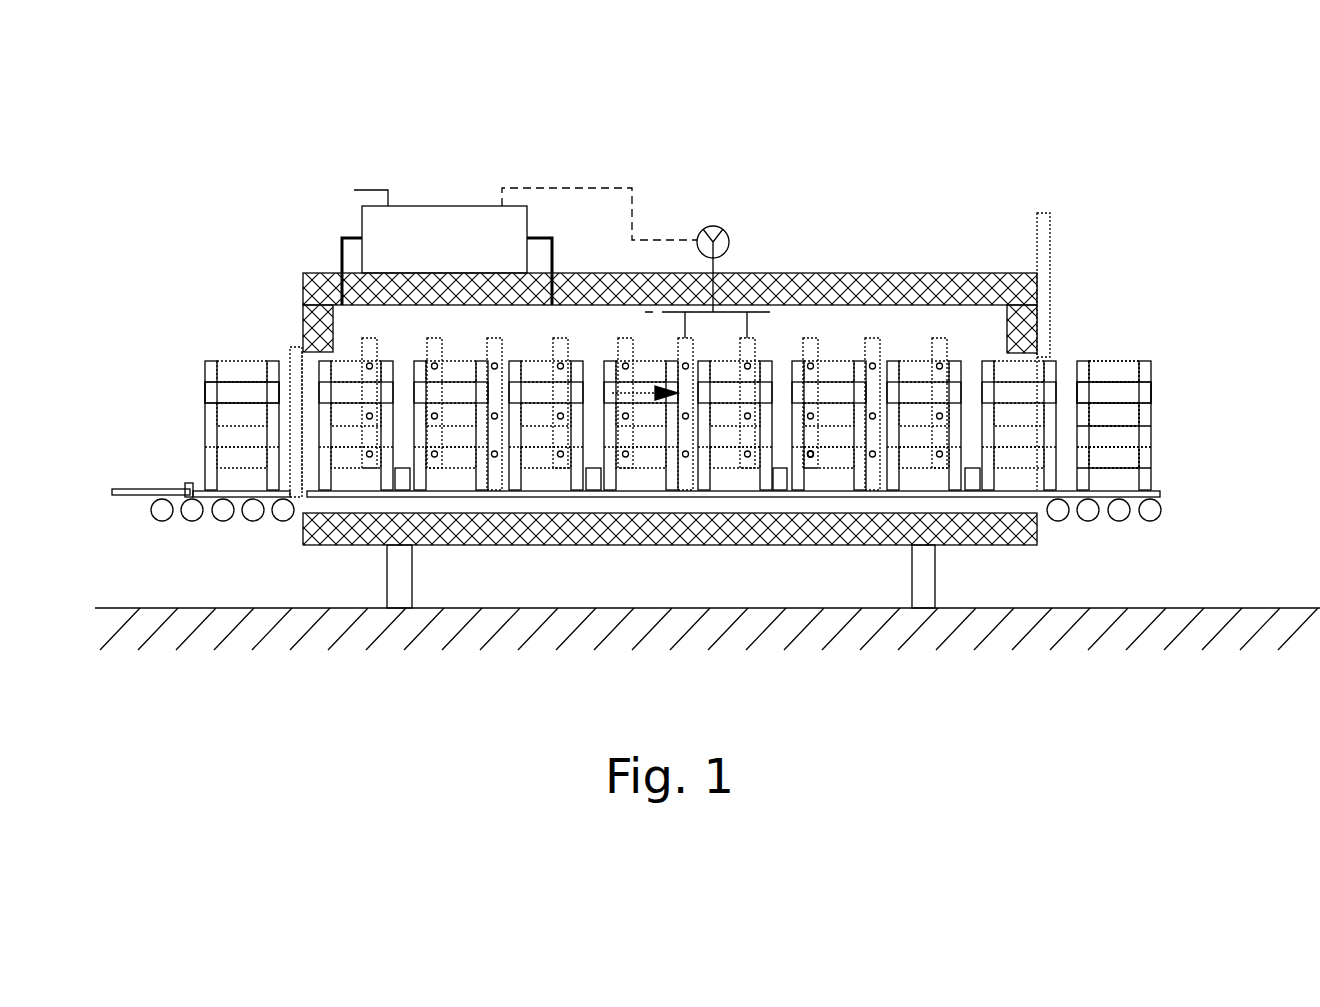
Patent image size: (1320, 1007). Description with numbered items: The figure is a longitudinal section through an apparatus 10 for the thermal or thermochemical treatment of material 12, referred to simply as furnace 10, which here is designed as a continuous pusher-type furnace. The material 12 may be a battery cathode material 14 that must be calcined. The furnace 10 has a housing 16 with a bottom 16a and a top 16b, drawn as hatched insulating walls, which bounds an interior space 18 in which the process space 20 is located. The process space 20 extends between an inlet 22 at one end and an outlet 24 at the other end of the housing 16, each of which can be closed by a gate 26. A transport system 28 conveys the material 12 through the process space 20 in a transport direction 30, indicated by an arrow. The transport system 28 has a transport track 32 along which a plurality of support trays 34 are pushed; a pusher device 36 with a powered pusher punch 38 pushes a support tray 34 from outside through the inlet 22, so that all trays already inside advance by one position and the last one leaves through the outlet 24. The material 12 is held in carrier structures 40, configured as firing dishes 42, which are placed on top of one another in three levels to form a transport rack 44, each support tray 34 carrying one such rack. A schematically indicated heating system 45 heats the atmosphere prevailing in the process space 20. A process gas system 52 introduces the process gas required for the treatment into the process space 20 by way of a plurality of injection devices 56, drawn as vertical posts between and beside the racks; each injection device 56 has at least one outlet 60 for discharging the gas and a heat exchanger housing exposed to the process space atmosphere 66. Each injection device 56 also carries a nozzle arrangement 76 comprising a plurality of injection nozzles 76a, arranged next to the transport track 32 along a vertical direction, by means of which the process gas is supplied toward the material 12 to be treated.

The apparatus 10 is at (278, 147).
The material 12 is at (244, 377).
The battery cathode material 14 is at (250, 384).
The housing 16 is at (649, 406).
The bottom 16a is at (656, 545).
The top 16b is at (582, 278).
The interior space 18 is at (425, 338).
The process space 20 is at (408, 338).
The inlet 22 is at (304, 352).
The outlet 24 is at (1048, 350).
The gate 26 is at (290, 349).
The transport system 28 is at (621, 544).
The transport direction 30 is at (640, 380).
The transport track 32 is at (1022, 494).
The support tray 34 is at (745, 498).
The pusher device 36 is at (130, 510).
The pusher punch 38 is at (160, 489).
The carrier structure 40 is at (1152, 380).
The firing dish 42 is at (1152, 363).
The transport rack 44 is at (1143, 355).
The heating system 45 is at (400, 203).
The process gas system 52 is at (718, 228).
The injection device 56 is at (626, 338).
The outlet 60 is at (818, 457).
The process space atmosphere 66 is at (878, 300).
The nozzle arrangement 76 is at (748, 352).
The injection nozzle 76a is at (812, 460).